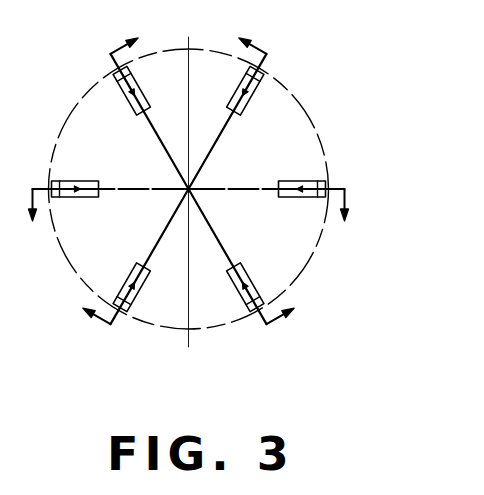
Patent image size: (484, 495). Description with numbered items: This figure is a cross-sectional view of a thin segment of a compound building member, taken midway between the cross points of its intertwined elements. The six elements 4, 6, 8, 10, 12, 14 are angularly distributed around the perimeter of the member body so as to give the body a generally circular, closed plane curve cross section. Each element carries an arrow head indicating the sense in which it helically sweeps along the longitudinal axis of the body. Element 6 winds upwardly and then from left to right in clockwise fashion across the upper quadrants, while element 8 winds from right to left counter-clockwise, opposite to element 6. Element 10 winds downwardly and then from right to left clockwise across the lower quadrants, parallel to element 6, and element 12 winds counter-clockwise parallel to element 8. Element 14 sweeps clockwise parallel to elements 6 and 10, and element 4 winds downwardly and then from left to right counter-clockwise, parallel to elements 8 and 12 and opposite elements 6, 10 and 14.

The element 4 is at (76, 197).
The element 6 is at (112, 86).
The element 8 is at (257, 87).
The element 10 is at (300, 197).
The element 12 is at (245, 302).
The element 14 is at (137, 298).